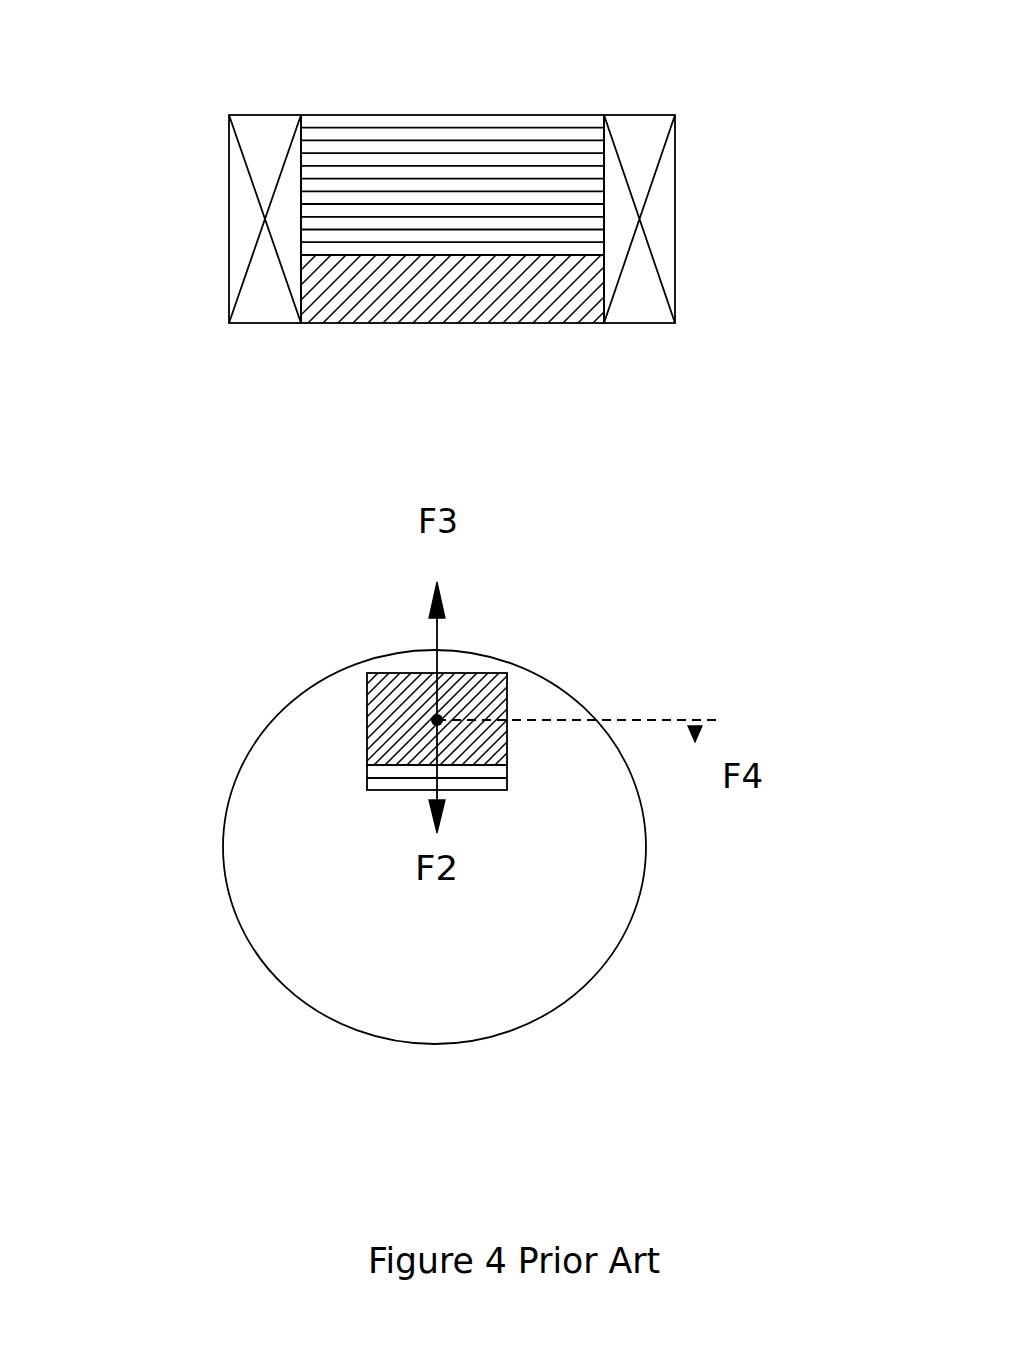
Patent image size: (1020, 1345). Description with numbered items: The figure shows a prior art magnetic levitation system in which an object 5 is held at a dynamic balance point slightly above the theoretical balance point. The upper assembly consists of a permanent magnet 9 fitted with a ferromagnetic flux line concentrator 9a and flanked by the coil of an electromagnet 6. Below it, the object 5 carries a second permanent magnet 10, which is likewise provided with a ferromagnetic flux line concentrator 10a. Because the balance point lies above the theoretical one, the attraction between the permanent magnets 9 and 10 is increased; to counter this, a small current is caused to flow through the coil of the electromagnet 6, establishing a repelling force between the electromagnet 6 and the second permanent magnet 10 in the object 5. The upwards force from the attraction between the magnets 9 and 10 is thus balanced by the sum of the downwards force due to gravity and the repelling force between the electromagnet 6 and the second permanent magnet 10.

The object 5 is at (320, 833).
The electromagnet 6 is at (652, 160).
The permanent magnet 9 is at (415, 323).
The ferromagnetic flux line concentrator 9a is at (442, 162).
The second permanent magnet 10 is at (393, 718).
The ferromagnetic flux line concentrator 10a is at (507, 790).